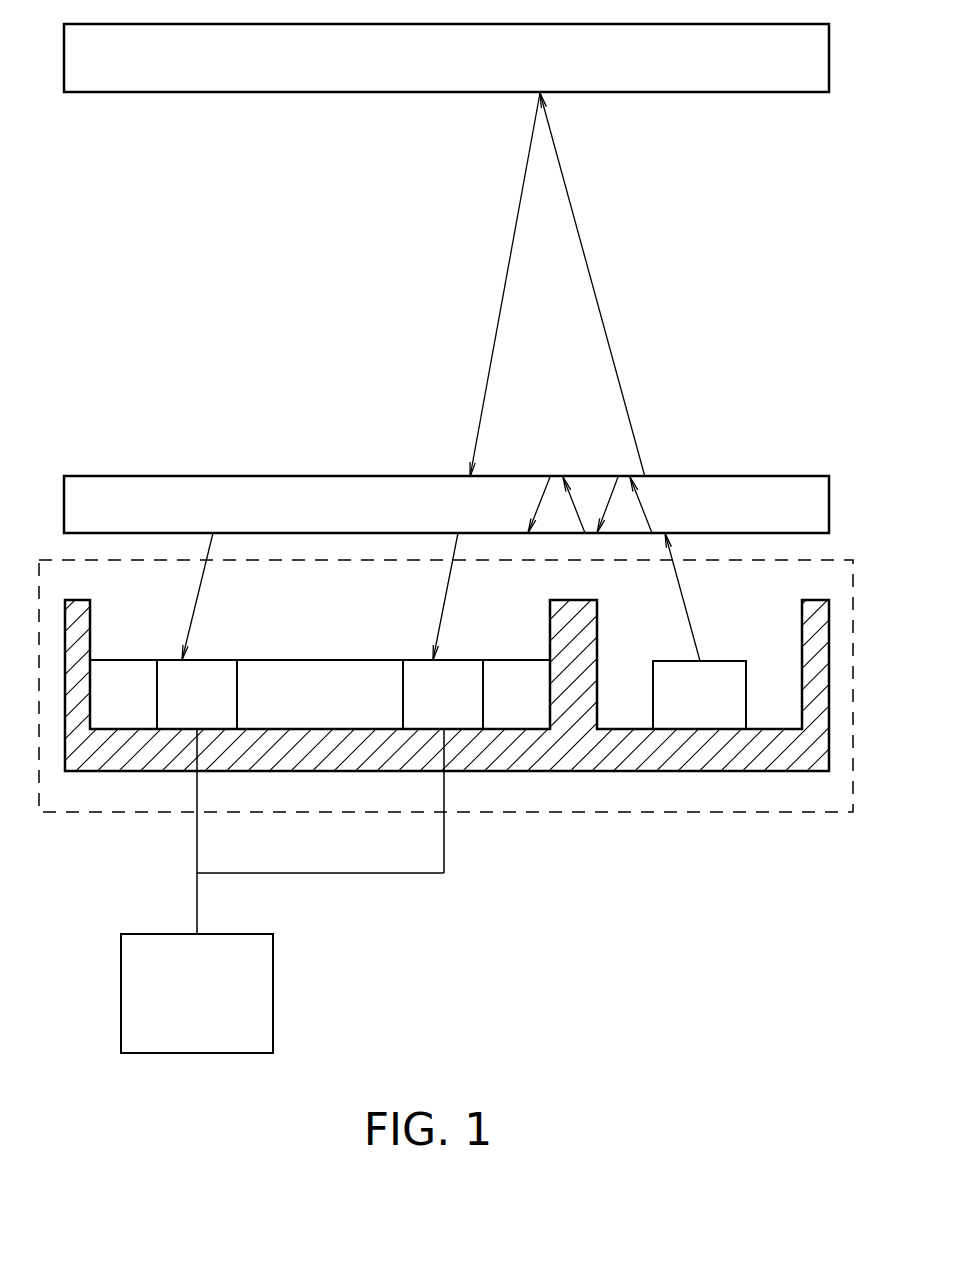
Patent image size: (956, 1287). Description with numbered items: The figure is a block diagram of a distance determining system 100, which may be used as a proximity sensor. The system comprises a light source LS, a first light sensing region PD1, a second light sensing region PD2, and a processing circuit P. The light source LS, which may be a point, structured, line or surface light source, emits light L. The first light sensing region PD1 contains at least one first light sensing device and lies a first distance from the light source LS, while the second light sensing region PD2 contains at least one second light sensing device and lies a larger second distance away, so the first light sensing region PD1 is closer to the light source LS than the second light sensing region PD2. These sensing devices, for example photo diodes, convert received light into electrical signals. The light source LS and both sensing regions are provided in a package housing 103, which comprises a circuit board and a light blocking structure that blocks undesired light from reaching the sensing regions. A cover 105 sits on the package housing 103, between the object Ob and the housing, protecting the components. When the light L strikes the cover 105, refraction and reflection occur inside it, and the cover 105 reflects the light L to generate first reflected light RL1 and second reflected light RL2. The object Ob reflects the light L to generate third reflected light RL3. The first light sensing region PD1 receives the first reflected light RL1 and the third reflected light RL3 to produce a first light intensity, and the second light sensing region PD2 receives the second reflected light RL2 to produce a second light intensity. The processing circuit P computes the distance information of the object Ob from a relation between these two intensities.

The distance determining system 100 is at (78, 822).
The package housing 103 is at (714, 752).
The cover 105 is at (468, 517).
The object Ob is at (446, 58).
The first light sensing region PD1 is at (443, 694).
The second light sensing region PD2 is at (197, 694).
The light source LS is at (699, 695).
The processing circuit P is at (273, 990).
The light L is at (627, 377).
The first reflected light RL1 is at (468, 596).
The second reflected light RL2 is at (219, 596).
The third reflected light RL3 is at (511, 285).